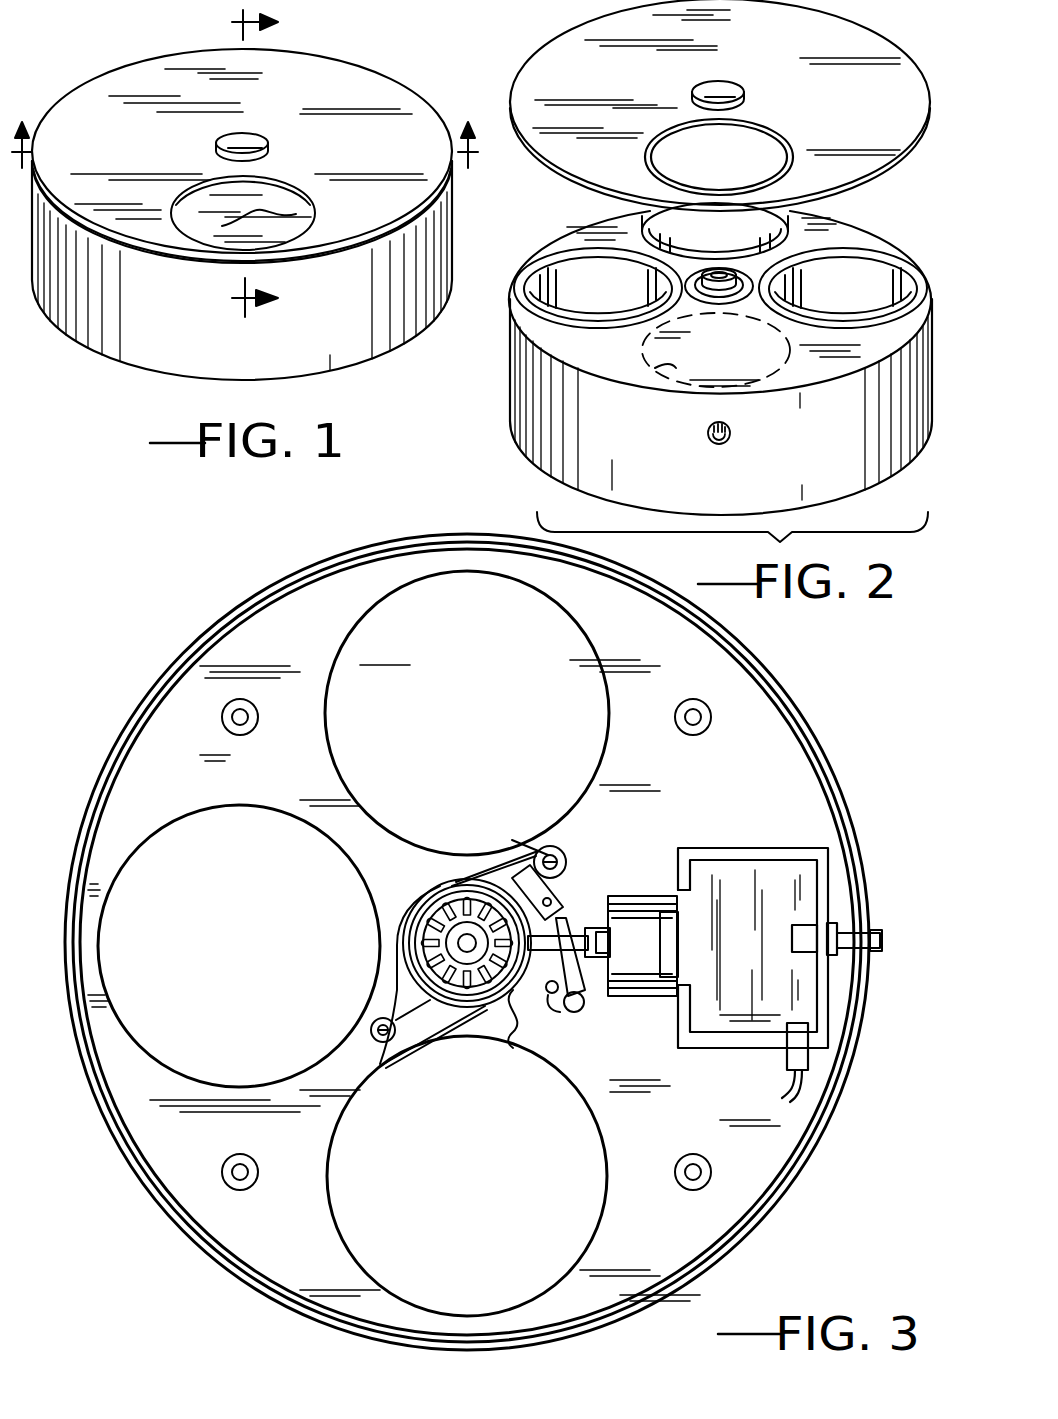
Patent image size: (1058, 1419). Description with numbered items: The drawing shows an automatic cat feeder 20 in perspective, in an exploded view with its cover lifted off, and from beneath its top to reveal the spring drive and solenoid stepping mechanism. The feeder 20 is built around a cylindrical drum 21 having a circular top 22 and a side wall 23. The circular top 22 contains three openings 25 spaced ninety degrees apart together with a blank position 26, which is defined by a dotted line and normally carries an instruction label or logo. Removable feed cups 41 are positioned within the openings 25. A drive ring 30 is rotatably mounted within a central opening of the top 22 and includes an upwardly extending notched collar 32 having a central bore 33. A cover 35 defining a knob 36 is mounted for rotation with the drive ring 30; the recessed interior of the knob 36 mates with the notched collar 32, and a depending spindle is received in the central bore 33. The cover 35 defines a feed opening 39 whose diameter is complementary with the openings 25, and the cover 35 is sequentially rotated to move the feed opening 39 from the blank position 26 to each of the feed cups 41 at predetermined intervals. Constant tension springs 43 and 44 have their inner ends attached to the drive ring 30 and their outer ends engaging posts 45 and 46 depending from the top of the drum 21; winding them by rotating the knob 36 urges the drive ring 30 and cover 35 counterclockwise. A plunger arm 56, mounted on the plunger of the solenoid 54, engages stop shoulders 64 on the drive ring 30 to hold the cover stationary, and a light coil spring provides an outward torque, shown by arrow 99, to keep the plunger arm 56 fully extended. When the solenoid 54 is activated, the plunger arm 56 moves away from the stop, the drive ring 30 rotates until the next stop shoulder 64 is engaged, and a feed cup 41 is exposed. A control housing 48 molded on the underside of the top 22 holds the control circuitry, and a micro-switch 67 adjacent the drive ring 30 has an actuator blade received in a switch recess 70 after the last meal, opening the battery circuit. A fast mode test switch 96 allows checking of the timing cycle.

In FIG. 1, the cat feeder 20 is at (362, 360).
In FIG. 1, the cylindrical drum 21 is at (332, 326).
In FIG. 2, the cylindrical drum 21 is at (815, 466).
In FIG. 2, the circular top 22 is at (733, 362).
In FIG. 3, the circular top 22 is at (725, 789).
In FIG. 2, the side wall 23 is at (620, 446).
In FIG. 3, the openings 25 is at (578, 636).
In FIG. 1, the blank position 26 is at (300, 212).
In FIG. 2, the blank position 26 is at (660, 366).
In FIG. 3, the drive ring 30 is at (432, 898).
In FIG. 2, the notched collar 32 is at (740, 300).
In FIG. 2, the central bore 33 is at (720, 268).
In FIG. 1, the cover 35 is at (140, 166).
In FIG. 2, the cover 35 is at (622, 86).
In FIG. 1, the knob 36 is at (250, 138).
In FIG. 2, the knob 36 is at (726, 81).
In FIG. 1, the feed opening 39 is at (272, 182).
In FIG. 2, the feed opening 39 is at (768, 126).
In FIG. 2, the feed cups 41 is at (666, 228).
In FIG. 3, the constant tension spring 43 is at (382, 1052).
In FIG. 3, the constant tension spring 44 is at (516, 842).
In FIG. 3, the post 45 is at (368, 1032).
In FIG. 3, the post 46 is at (568, 852).
In FIG. 3, the control housing 48 is at (720, 852).
In FIG. 3, the solenoid 54 is at (663, 960).
In FIG. 3, the plunger arm 56 is at (568, 1012).
In FIG. 3, the stop shoulders 64 is at (476, 880).
In FIG. 3, the micro-switch 67 is at (562, 890).
In FIG. 3, the switch recess 70 is at (513, 1048).
In FIG. 2, the fast mode switch 96 is at (718, 444).
In FIG. 3, the fast mode switch 96 is at (880, 936).
In FIG. 3, the arrow 99 is at (560, 915).